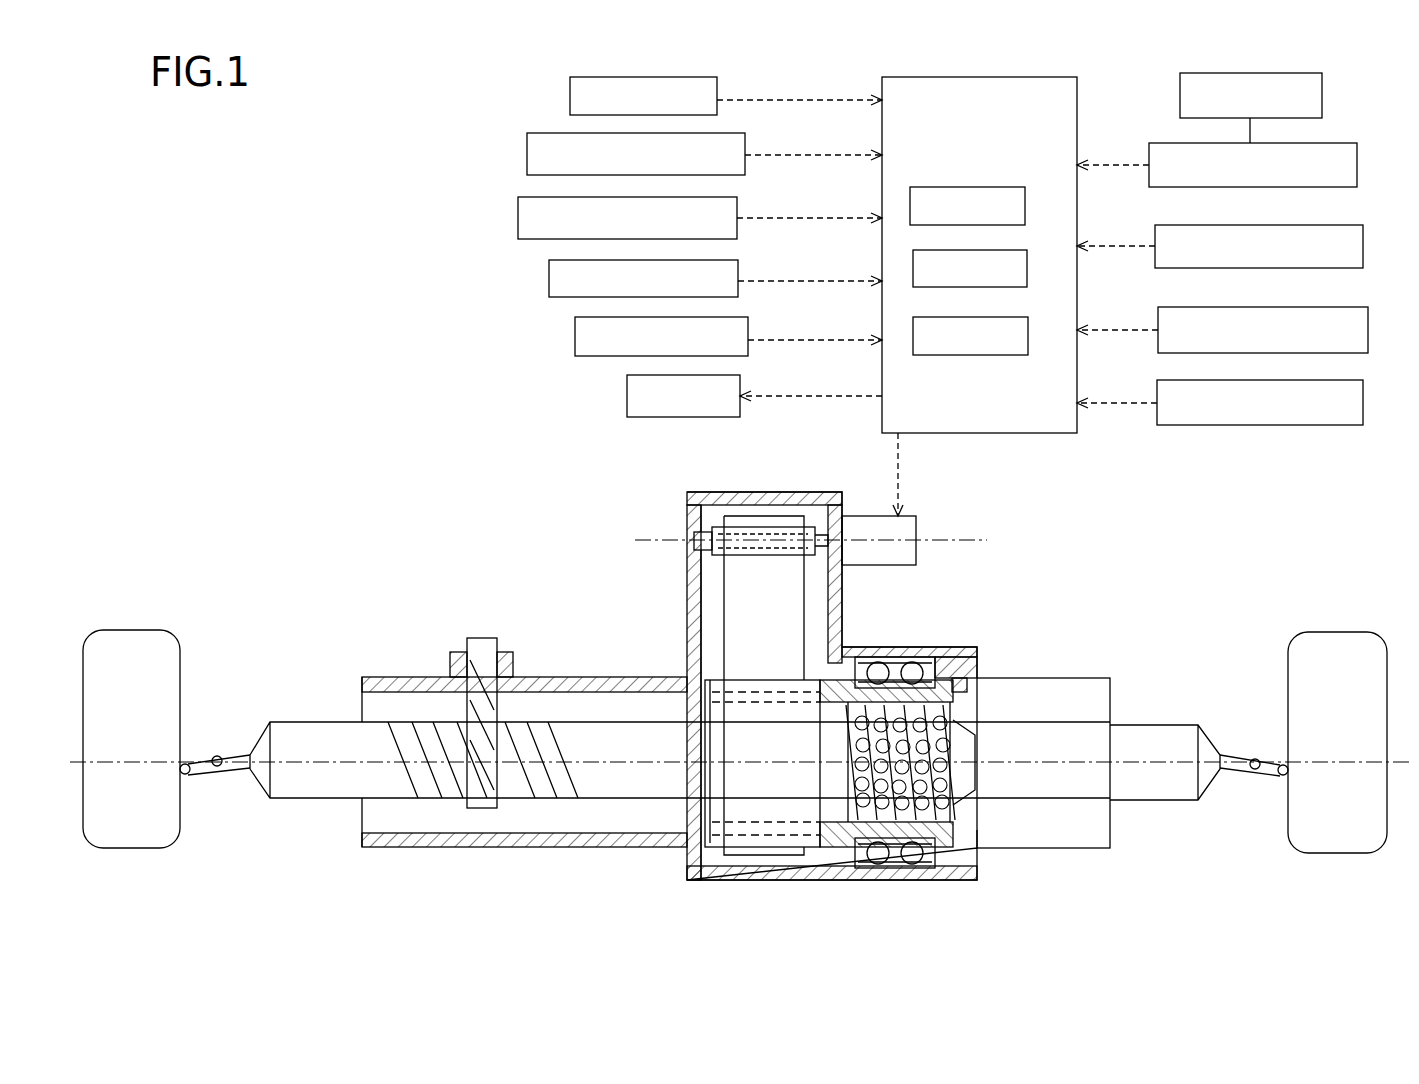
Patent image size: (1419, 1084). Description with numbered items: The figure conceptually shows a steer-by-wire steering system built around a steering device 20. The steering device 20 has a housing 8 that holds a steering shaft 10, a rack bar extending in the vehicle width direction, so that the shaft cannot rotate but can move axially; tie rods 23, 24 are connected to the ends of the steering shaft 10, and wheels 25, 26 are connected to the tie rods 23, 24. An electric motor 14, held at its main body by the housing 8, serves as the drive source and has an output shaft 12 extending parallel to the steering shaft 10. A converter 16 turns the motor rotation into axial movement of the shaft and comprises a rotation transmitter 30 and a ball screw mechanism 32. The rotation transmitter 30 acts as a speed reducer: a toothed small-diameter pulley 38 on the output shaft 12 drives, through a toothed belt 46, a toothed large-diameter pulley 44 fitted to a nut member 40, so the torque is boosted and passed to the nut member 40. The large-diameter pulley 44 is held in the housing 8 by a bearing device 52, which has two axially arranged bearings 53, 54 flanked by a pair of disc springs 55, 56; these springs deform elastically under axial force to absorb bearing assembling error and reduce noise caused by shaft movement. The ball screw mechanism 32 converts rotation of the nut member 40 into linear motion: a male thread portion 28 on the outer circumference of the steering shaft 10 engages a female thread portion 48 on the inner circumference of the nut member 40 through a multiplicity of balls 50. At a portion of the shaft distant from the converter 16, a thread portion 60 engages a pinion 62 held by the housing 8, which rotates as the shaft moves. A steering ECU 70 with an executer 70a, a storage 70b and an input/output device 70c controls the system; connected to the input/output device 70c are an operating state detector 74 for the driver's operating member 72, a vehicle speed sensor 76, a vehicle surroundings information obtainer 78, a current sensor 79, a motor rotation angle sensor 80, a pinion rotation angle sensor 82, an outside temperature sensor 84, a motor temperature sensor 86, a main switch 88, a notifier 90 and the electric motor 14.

The housing 8 is at (555, 680).
The steering shaft 10 is at (342, 748).
The output shaft 12 is at (698, 535).
The electric motor 14 is at (855, 557).
The converter 16 is at (676, 466).
The steering device 20 is at (657, 877).
The tie rod 23 is at (228, 752).
The tie rod 24 is at (1238, 755).
The wheel 25 is at (148, 645).
The wheel 26 is at (1330, 645).
The male thread portion 28 is at (1000, 762).
The rotation transmitter 30 is at (706, 590).
The ball screw mechanism 32 is at (975, 832).
The small-diameter pulley 38 is at (713, 528).
The nut member 40 is at (830, 845).
The large-diameter pulley 44 is at (712, 880).
The belt 46 is at (735, 630).
The female thread portion 48 is at (990, 752).
The balls 50 is at (975, 790).
The bearing device 52 is at (930, 880).
The bearing 53 is at (862, 880).
The bearing 54 is at (900, 870).
The disc spring 55 is at (928, 660).
The disc spring 56 is at (868, 660).
The thread portion 60 is at (452, 796).
The pinion 62 is at (485, 660).
The steering ECU 70 is at (1057, 78).
The executer 70a is at (1000, 192).
The storage 70b is at (1000, 258).
The input/output device 70c is at (1000, 320).
The operating member 72 is at (1317, 76).
The operating state detector 74 is at (1320, 146).
The vehicle speed sensor 76 is at (1325, 228).
The vehicle surroundings information obtainer 78 is at (1330, 312).
The current sensor 79 is at (707, 78).
The motor rotation angle sensor 80 is at (740, 134).
The pinion rotation angle sensor 82 is at (732, 200).
The outside temperature sensor 84 is at (736, 260).
The motor temperature sensor 86 is at (742, 318).
The main switch 88 is at (1328, 388).
The notifier 90 is at (738, 376).